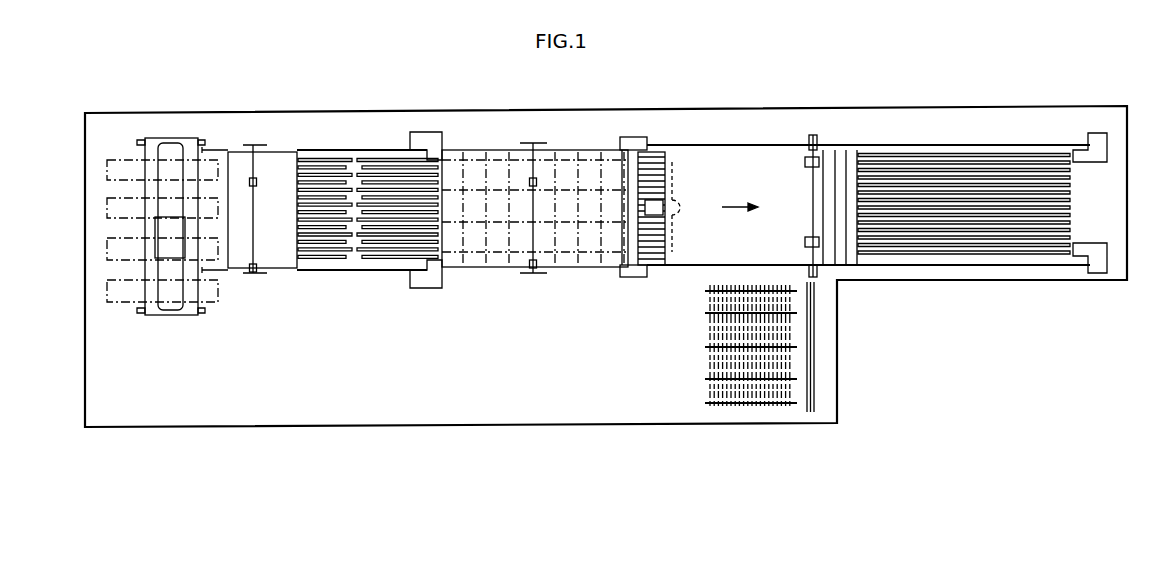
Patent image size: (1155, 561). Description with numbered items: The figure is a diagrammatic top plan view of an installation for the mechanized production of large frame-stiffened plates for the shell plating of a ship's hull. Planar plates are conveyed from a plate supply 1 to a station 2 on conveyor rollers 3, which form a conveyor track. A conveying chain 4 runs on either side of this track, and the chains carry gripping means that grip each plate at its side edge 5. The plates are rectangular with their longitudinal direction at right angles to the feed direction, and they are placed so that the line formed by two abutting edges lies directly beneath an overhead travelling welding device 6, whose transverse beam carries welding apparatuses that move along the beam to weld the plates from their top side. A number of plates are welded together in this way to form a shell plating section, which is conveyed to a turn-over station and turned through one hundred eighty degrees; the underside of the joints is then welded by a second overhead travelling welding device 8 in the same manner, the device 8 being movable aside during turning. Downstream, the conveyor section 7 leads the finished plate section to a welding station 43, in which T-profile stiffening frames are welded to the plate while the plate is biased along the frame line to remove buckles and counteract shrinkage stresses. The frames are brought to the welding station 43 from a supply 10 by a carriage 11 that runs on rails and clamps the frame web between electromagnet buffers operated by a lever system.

The plate supply 1 is at (170, 152).
The station 2 is at (237, 150).
The conveyor rollers 3 is at (365, 160).
The conveying chain 4 is at (397, 150).
The side edge 5 is at (290, 150).
The overhead travelling welding device 6 is at (256, 222).
The conveyor section 7 is at (498, 170).
The overhead travelling welding device 8 is at (540, 265).
The supply 10 is at (725, 357).
The carriage 11 is at (810, 332).
The welding station 43 is at (814, 130).